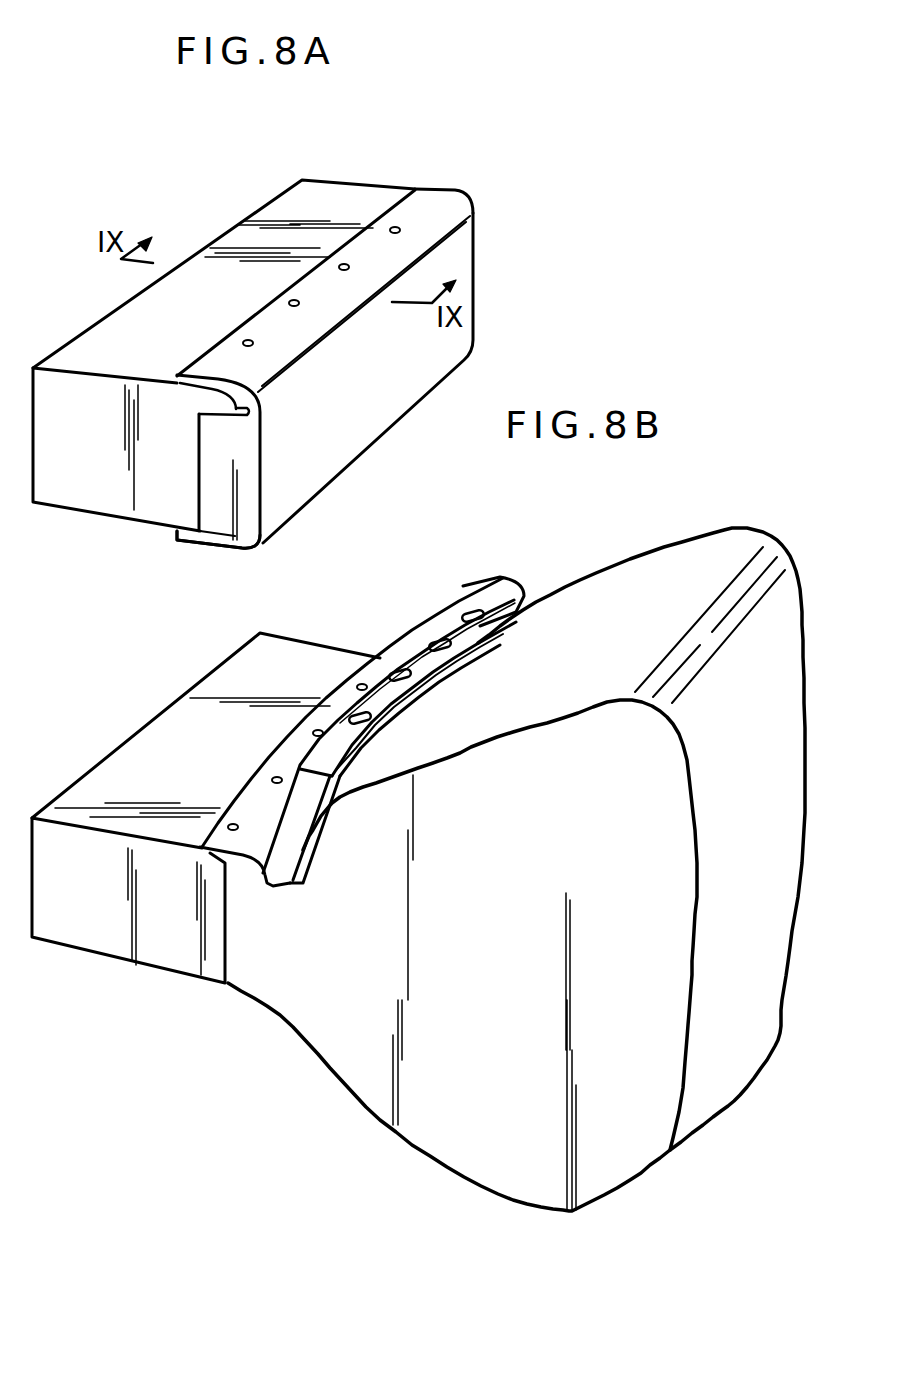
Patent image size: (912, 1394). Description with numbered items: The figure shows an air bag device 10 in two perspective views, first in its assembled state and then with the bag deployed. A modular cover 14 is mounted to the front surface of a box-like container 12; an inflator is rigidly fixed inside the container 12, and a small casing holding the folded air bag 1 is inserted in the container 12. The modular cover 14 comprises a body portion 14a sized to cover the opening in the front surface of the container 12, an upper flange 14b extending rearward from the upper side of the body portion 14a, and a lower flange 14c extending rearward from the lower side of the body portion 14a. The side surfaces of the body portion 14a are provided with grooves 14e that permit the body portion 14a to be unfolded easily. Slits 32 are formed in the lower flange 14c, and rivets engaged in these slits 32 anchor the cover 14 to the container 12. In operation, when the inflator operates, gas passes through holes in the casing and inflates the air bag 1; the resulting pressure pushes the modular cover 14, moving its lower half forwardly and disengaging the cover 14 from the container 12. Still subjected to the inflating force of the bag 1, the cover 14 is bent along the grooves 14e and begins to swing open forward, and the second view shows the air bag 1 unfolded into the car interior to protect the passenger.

In FIG. 8B, the air bag 1 is at (663, 587).
In FIG. 8A, the air bag device 10 is at (365, 182).
In FIG. 8A, the container 12 is at (73, 355).
In FIG. 8B, the container 12 is at (273, 664).
In FIG. 8A, the modular cover 14 is at (440, 202).
In FIG. 8B, the modular cover 14 is at (521, 573).
In FIG. 8A, the body portion 14a is at (400, 383).
In FIG. 8B, the body portion 14a is at (287, 826).
In FIG. 8A, the upper flange 14b is at (217, 360).
In FIG. 8B, the upper flange 14b is at (253, 810).
In FIG. 8A, the lower flange 14c is at (200, 541).
In FIG. 8B, the lower flange 14c is at (457, 627).
In FIG. 8A, the grooves 14e is at (236, 416).
In FIG. 8B, the slits 32 is at (401, 668).